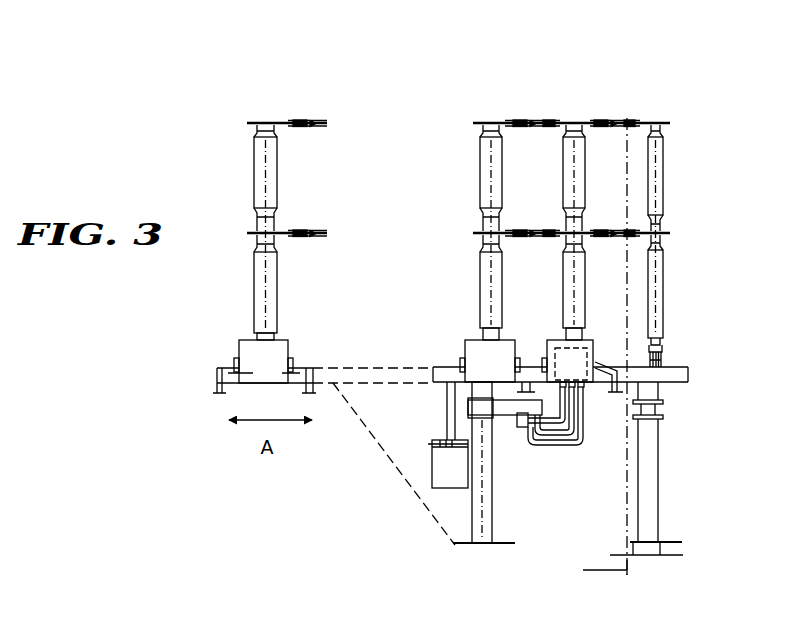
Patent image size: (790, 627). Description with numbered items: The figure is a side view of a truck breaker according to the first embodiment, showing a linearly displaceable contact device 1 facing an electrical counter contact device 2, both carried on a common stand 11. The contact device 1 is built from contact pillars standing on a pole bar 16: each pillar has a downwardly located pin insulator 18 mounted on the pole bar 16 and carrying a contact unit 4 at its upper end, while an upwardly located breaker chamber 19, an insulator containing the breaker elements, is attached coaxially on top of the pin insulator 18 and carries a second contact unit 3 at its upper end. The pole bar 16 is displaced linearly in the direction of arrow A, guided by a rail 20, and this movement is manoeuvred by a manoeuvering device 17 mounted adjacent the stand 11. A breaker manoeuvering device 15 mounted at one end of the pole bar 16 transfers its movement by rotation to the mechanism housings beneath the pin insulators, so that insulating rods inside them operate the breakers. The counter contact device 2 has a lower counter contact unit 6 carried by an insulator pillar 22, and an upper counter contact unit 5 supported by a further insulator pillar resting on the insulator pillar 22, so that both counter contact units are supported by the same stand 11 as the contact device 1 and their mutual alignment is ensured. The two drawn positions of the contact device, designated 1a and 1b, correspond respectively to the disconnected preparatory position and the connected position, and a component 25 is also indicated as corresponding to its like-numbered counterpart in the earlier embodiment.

The contact device 1 is at (270, 101).
The contact device in disconnected preparatory position 1a is at (496, 104).
The contact device in connected position 1b is at (578, 104).
The counter contact device 2 is at (658, 66).
The contact unit 3 is at (303, 122).
The contact unit 4 is at (305, 233).
The upper counter contact unit 5 is at (672, 123).
The lower counter contact unit 6 is at (668, 232).
The stand 11 is at (431, 552).
The breaker manoeuvering device 15 is at (258, 350).
The pole bar 16 is at (560, 352).
The manoeuvering device 17 is at (458, 466).
The pin insulator 18 is at (258, 293).
The breaker chamber 19 is at (258, 180).
The rail 20 is at (685, 372).
The insulator pillar 22 is at (656, 285).
The truck breaker component 25 is at (662, 358).